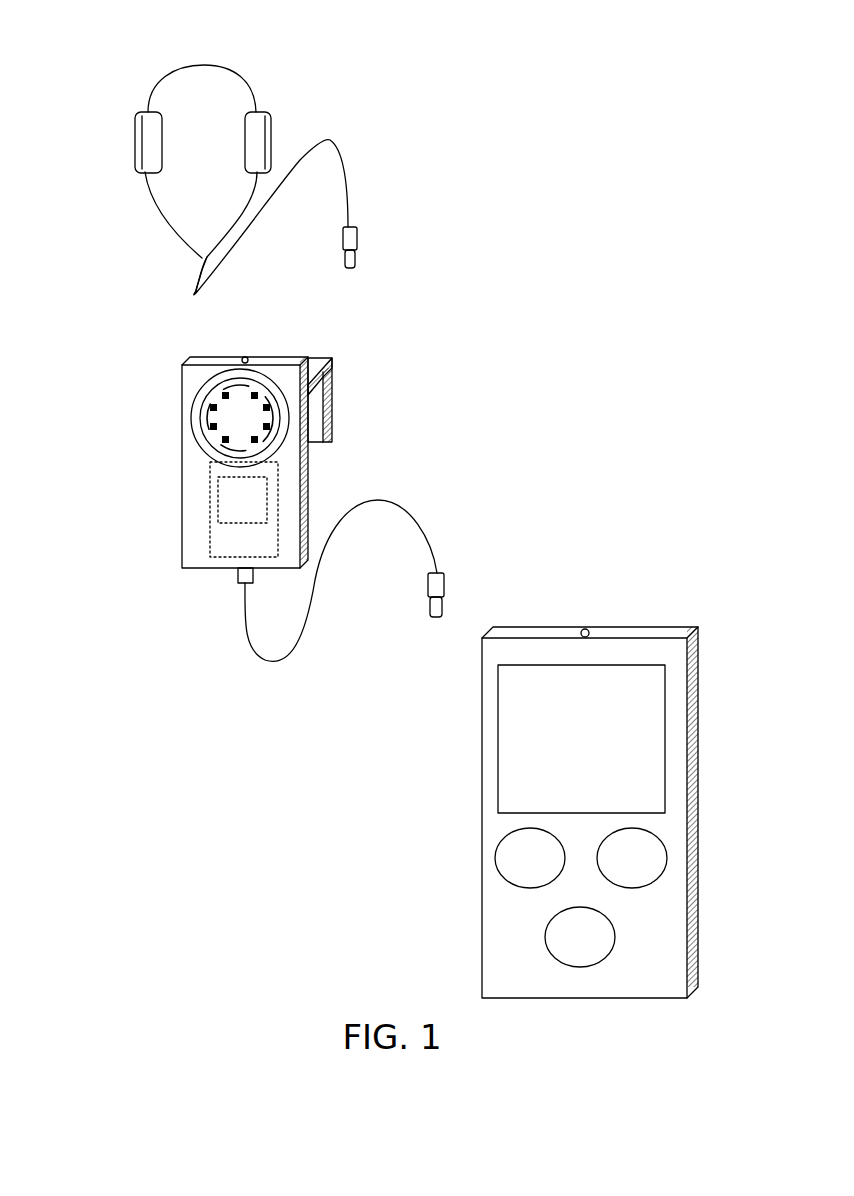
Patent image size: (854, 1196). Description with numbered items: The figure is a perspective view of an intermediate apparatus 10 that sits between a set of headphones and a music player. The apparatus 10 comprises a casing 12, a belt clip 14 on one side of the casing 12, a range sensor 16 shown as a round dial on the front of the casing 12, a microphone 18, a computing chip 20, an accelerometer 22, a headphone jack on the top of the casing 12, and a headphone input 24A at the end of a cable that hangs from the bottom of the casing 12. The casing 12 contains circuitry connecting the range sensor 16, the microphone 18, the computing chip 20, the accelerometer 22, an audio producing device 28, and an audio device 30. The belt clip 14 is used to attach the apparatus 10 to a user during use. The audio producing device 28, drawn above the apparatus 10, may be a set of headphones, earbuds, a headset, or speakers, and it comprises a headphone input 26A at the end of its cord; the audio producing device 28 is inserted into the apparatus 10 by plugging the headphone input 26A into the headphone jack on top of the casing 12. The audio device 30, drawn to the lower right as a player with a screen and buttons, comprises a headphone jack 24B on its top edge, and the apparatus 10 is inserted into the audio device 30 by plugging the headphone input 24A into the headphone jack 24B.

The apparatus 10 is at (160, 343).
The casing 12 is at (190, 552).
The belt clip 14 is at (332, 398).
The range sensor 16 is at (200, 402).
The microphone 18 is at (238, 540).
The computing chip 20 is at (225, 548).
The accelerometer 22 is at (240, 507).
The headphone input 24A is at (440, 573).
The headphone jack 24B is at (587, 630).
The headphone input 26A is at (350, 233).
The audio producing device 28 is at (268, 96).
The audio device 30 is at (653, 652).